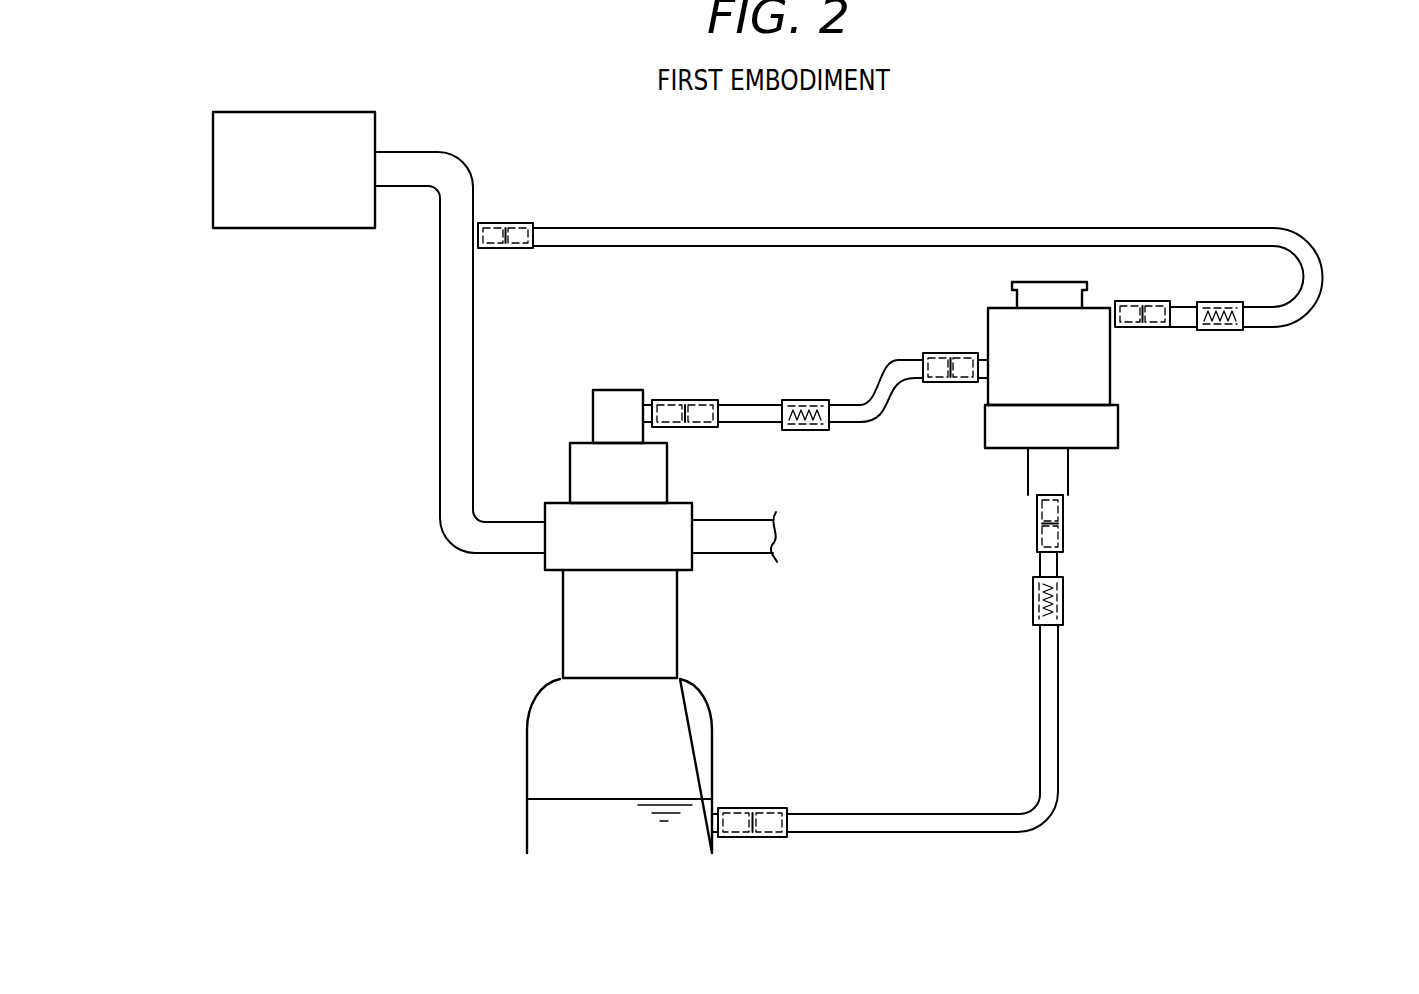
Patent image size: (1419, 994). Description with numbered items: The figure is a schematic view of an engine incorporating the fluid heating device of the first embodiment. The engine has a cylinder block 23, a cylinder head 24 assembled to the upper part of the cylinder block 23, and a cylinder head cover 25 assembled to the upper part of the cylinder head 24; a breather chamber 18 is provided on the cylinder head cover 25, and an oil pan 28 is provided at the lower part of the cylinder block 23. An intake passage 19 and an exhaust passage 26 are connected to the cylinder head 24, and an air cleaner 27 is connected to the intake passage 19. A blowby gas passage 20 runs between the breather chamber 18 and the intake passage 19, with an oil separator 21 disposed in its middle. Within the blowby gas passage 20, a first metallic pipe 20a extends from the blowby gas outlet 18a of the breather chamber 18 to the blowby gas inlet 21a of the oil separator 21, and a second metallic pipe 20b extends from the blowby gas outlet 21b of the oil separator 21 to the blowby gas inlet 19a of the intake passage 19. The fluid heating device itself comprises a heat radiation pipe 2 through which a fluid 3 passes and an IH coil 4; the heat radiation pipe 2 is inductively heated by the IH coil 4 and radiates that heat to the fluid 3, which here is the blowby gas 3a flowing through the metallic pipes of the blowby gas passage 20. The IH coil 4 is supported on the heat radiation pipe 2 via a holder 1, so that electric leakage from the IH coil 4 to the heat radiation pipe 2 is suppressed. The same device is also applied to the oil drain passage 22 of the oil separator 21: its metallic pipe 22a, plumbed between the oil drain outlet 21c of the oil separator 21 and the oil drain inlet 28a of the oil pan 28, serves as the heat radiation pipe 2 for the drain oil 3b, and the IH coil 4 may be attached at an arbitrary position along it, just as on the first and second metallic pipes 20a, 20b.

The holder 1 is at (1033, 467).
The heat radiation pipe 2 is at (928, 507).
The fluid 3 is at (886, 417).
The blowby gas 3a is at (492, 278).
The drain oil 3b is at (1085, 523).
The IH coil 4 is at (800, 403).
The breather chamber 18 is at (593, 405).
The blowby gas outlet 18a is at (665, 404).
The intake passage 19 is at (438, 386).
The blowby gas inlet 19a is at (487, 233).
The blowby gas passage 20 is at (928, 507).
The first metallic pipe 20a is at (848, 404).
The second metallic pipe 20b is at (887, 236).
The oil separator 21 is at (1115, 377).
The blowby gas inlet 21a is at (967, 362).
The blowby gas outlet 21b is at (1132, 303).
The oil drain outlet 21c is at (1055, 508).
The oil drain passage 22 is at (1066, 728).
The metallic pipe 22a is at (1052, 658).
The cylinder block 23 is at (668, 660).
The cylinder head 24 is at (677, 558).
The cylinder head cover 25 is at (662, 484).
The exhaust passage 26 is at (750, 552).
The air cleaner 27 is at (340, 120).
The oil pan 28 is at (713, 846).
The oil drain inlet 28a is at (733, 815).